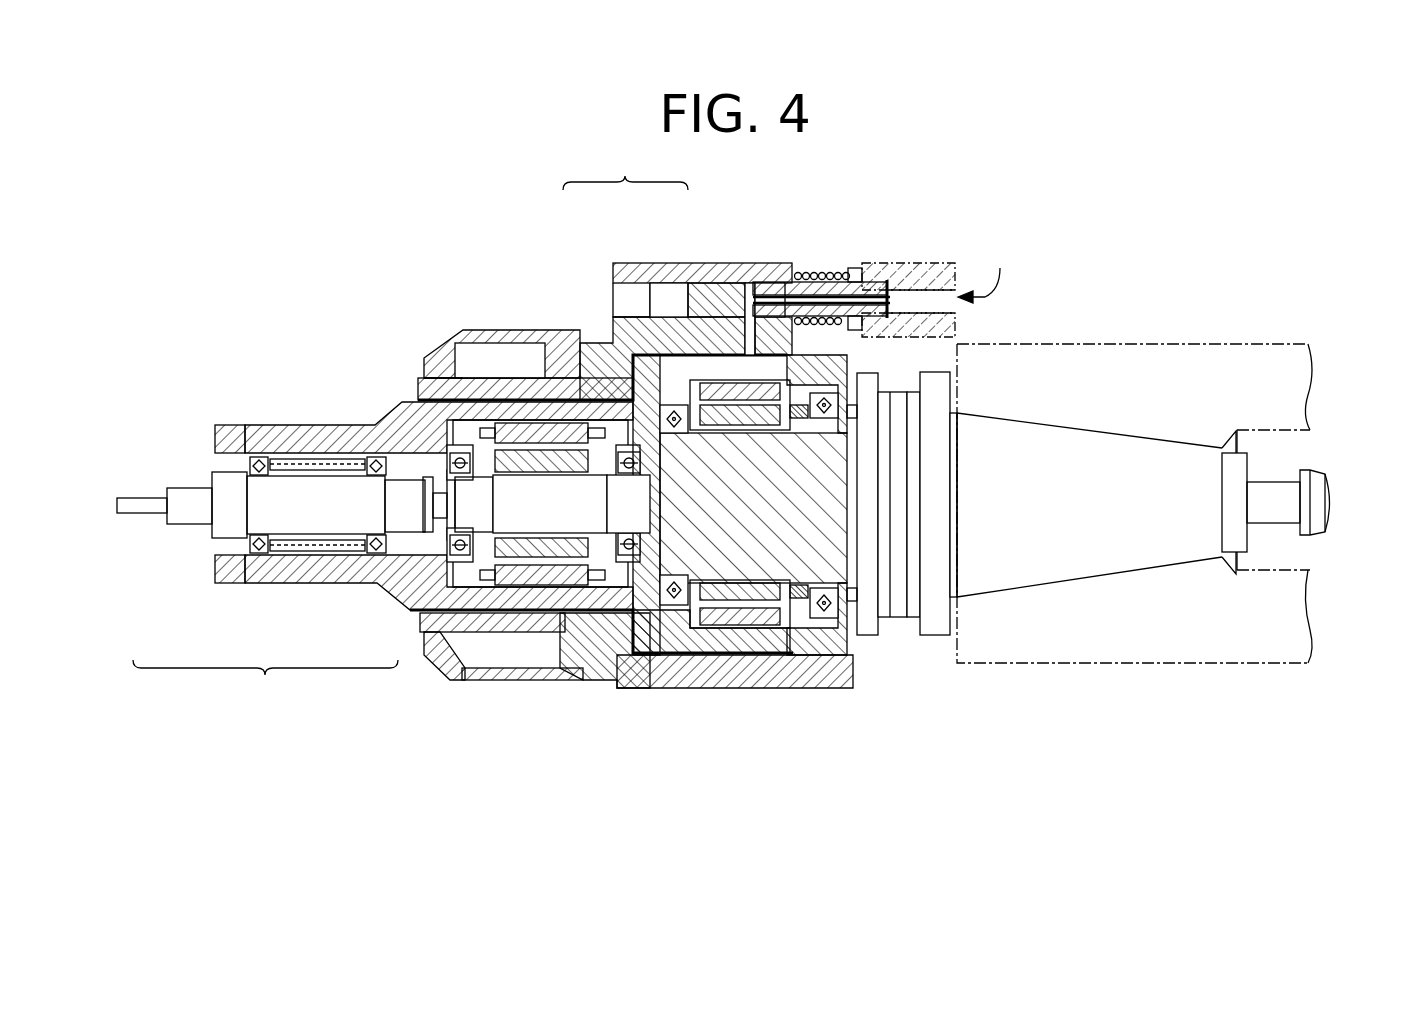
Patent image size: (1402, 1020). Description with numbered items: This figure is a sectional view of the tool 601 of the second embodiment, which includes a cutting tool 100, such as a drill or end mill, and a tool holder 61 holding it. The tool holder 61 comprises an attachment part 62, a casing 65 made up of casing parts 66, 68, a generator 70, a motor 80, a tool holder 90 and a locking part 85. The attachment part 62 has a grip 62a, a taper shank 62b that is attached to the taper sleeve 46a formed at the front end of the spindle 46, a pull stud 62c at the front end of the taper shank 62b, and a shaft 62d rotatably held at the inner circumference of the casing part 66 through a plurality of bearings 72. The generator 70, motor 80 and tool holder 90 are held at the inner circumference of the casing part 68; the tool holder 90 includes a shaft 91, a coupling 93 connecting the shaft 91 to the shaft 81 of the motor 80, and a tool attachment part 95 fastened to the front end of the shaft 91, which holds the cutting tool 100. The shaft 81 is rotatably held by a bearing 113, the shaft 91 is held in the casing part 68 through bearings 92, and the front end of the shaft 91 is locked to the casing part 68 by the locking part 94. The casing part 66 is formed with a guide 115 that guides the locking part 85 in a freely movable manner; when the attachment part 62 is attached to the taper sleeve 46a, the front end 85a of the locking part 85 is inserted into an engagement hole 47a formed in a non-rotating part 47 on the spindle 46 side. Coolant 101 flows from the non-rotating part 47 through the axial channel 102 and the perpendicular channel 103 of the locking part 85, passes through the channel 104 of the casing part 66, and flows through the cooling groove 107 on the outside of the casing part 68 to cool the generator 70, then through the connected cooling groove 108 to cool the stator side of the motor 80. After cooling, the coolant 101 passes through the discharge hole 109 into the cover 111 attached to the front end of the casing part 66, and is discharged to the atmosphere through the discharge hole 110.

The spindle 46 is at (1086, 665).
The taper sleeve 46a is at (1135, 570).
The non-rotating part 47 is at (922, 266).
The engagement hole 47a is at (945, 320).
The tool holder 61 is at (922, 652).
The attachment part 62 is at (948, 640).
The grip 62a is at (905, 620).
The taper shank 62b is at (1042, 585).
The pull stud 62c is at (1320, 470).
The shaft 62d is at (862, 636).
The casing 65 is at (625, 166).
The casing part 66 is at (650, 280).
The casing part 68 is at (603, 333).
The generator 70 is at (718, 630).
The bearings 72 is at (668, 610).
The motor 80 is at (518, 560).
The shaft 81 is at (475, 588).
The locking part 85 is at (860, 297).
The front end 85a is at (868, 275).
The tool holder 90 is at (265, 685).
The shaft 91 is at (300, 522).
The bearings 92 is at (256, 556).
The coupling 93 is at (398, 544).
The locking part 94 is at (227, 585).
The tool attachment part 95 is at (170, 526).
The cutting tool 100 is at (136, 497).
The coolant 101 is at (994, 270).
The channel 102 is at (810, 283).
The channel 103 is at (765, 300).
The channel 104 is at (748, 300).
The cooling groove 107 is at (640, 290).
The cooling groove 108 is at (536, 340).
The discharge hole 109 is at (461, 376).
The discharge hole 110 is at (470, 332).
The cover 111 is at (430, 362).
The bearing 113 is at (446, 556).
The guide 115 is at (700, 300).
The tool 601 is at (878, 818).